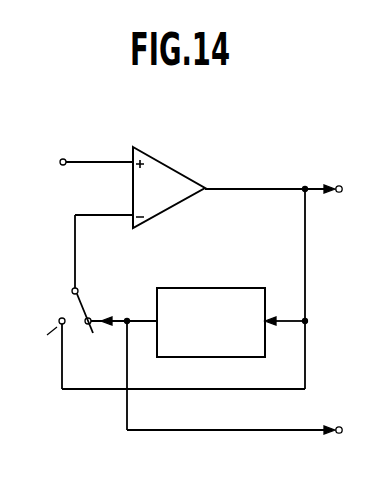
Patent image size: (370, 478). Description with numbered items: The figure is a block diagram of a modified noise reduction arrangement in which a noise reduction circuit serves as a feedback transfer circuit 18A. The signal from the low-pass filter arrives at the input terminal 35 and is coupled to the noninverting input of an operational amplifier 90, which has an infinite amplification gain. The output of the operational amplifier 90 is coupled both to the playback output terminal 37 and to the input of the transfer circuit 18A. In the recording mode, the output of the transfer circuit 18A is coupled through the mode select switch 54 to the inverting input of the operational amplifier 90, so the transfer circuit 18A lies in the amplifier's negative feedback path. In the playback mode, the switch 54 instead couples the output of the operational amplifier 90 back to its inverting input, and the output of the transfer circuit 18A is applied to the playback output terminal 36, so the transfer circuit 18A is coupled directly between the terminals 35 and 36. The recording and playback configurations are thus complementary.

The input terminal 35 is at (65, 158).
The operational amplifier 90 is at (208, 158).
The playback output terminal 37 is at (339, 186).
The transfer circuit 18A is at (222, 288).
The mode select switch 54 is at (82, 313).
The playback output terminal 36 is at (340, 426).